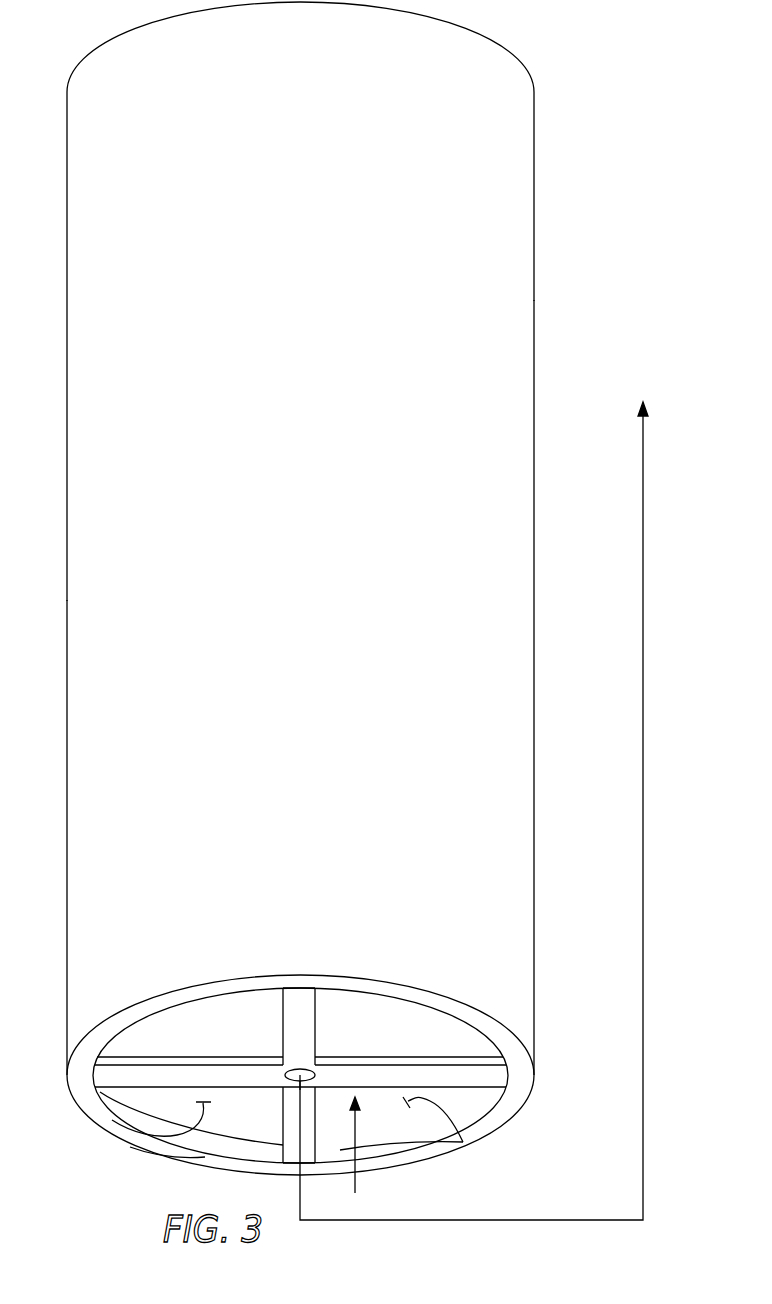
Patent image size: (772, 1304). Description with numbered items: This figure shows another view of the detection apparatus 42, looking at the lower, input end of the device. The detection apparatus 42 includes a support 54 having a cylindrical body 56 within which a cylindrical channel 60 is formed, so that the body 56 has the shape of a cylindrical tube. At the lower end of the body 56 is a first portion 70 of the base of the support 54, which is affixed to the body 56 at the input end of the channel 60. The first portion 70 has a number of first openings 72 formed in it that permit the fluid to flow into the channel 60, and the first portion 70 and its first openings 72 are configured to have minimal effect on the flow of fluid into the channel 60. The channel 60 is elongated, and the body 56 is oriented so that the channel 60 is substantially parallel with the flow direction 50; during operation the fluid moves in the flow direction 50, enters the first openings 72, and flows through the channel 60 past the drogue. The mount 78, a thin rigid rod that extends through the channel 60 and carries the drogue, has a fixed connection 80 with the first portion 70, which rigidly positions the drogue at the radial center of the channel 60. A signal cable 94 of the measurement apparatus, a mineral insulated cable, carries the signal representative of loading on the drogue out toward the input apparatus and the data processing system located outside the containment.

The detection apparatus 42 is at (537, 186).
The support 54 is at (601, 238).
The cylindrical body 56 is at (537, 320).
The cylindrical channel 60 is at (410, 1019).
The first portion 70 is at (129, 1086).
The first openings 72 is at (226, 1027).
The mount 78 is at (315, 1078).
The fixed connection 80 is at (296, 1072).
The flow direction 50 is at (356, 1188).
The signal cable 94 is at (643, 910).